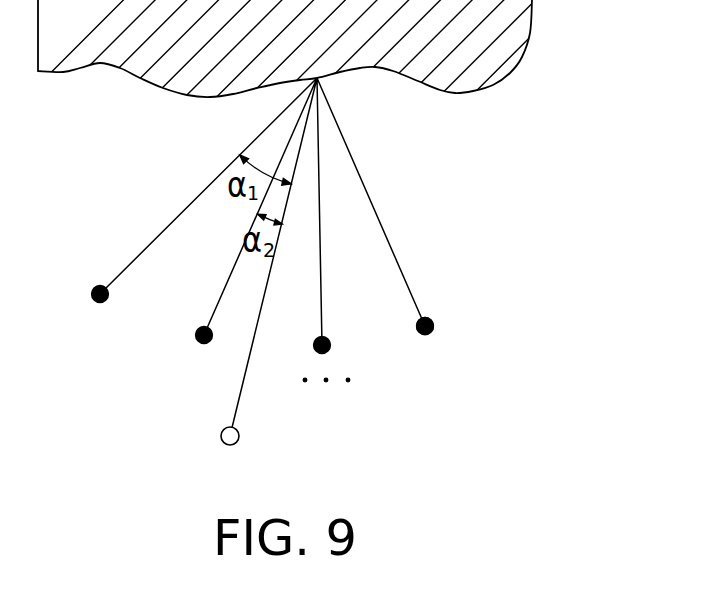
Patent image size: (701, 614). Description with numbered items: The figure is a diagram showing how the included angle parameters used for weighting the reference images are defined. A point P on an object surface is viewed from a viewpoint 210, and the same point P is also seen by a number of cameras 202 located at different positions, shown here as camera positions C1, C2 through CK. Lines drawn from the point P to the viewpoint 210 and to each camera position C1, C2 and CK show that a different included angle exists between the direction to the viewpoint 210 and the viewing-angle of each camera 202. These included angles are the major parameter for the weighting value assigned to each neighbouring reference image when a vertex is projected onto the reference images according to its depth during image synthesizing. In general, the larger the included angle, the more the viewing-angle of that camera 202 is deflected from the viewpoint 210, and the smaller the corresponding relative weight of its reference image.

The cameras 202 is at (447, 332).
The viewpoint 210 is at (240, 442).
The point on object surface P is at (262, 234).
The point C1 is at (89, 311).
The point C2 is at (198, 355).
The point CK is at (438, 347).